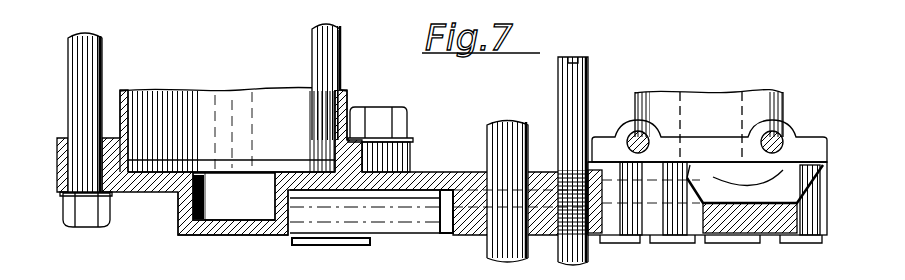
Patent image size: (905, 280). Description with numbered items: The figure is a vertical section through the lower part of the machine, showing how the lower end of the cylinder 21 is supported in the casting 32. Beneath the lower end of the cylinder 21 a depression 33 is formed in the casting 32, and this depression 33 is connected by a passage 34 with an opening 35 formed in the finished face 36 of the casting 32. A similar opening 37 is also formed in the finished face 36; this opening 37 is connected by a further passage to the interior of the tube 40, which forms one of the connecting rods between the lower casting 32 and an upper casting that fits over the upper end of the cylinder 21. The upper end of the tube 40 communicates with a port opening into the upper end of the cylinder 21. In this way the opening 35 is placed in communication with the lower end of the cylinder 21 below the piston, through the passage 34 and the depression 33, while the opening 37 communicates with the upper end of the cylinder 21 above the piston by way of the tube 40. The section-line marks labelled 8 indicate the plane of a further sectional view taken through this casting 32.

The cylinder 21 is at (177, 103).
The tube 40 is at (330, 62).
The passage 34 is at (427, 187).
The casting 32 is at (192, 238).
The depression 33 is at (252, 190).
The opening 35 is at (750, 105).
The finished face 36 is at (685, 178).
The opening 37 is at (682, 113).
The section line 8 is at (130, 207).